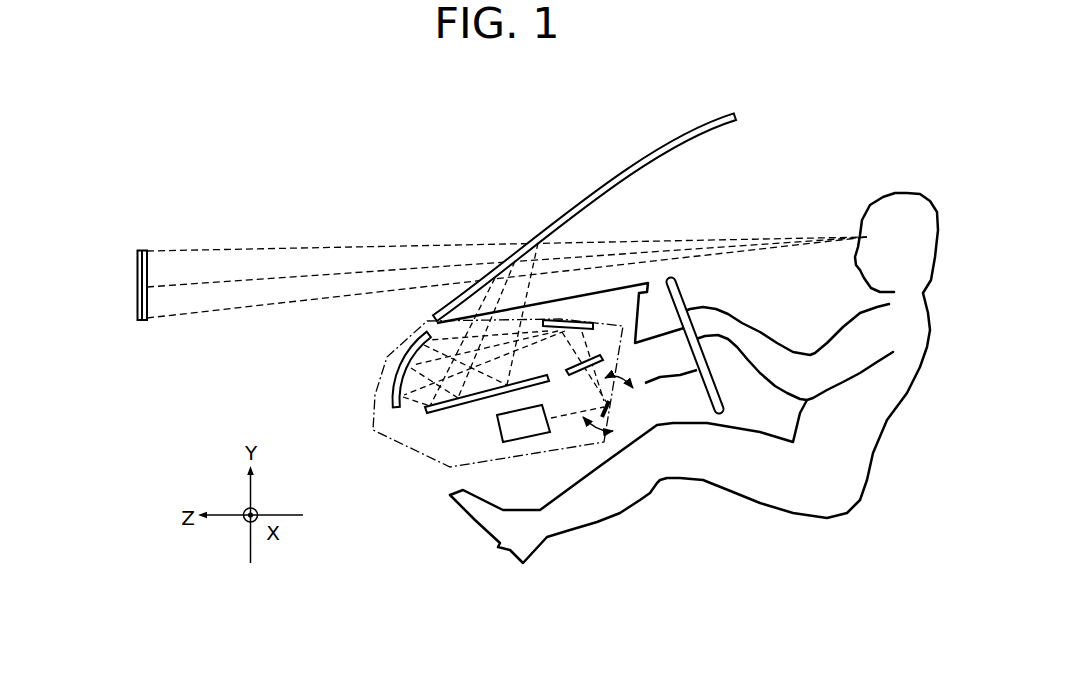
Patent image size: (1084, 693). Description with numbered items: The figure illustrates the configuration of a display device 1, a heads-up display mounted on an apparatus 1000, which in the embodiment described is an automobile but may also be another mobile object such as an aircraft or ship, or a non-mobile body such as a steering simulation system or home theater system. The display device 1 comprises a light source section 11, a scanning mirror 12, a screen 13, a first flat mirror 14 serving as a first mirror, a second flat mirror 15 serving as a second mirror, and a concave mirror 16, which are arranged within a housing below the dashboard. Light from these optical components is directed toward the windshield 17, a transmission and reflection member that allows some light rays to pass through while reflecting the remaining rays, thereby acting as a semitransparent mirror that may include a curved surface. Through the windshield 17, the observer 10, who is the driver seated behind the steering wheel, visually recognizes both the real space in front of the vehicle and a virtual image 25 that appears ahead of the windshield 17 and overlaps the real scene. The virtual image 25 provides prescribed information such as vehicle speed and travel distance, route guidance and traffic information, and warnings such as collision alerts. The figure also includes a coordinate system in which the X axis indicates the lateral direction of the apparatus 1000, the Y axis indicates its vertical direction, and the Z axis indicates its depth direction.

The apparatus 1000 is at (233, 141).
The display device 1 is at (786, 133).
The observer 10 is at (911, 192).
The light source section 11 is at (527, 443).
The scanning mirror 12 is at (612, 407).
The screen 13 is at (603, 357).
The first flat mirror 14 is at (470, 402).
The second flat mirror 15 is at (568, 323).
The concave mirror 16 is at (395, 378).
The windshield 17 is at (624, 171).
The virtual image 25 is at (137, 260).